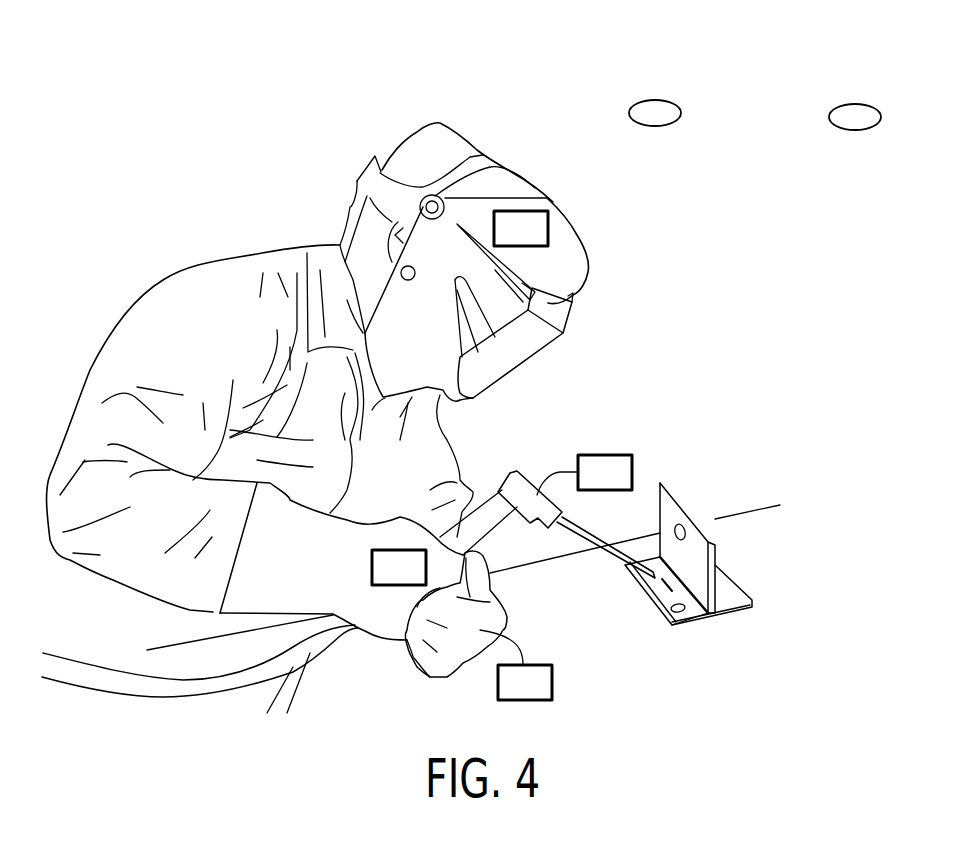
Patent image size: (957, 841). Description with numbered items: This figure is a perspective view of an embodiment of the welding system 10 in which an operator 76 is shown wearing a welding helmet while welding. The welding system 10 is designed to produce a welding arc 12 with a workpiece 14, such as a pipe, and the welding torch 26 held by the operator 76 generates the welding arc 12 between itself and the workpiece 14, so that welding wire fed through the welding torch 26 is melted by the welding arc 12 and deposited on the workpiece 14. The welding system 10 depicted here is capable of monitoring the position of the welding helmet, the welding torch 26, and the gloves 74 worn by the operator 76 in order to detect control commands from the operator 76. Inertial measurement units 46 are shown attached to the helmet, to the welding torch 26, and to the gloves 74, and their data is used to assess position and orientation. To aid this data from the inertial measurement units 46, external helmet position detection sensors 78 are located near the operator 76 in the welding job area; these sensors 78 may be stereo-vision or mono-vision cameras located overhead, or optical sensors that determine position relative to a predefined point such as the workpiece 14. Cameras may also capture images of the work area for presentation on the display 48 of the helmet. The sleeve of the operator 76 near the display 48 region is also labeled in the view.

The welding system 10 is at (192, 94).
The welding arc 12 is at (665, 585).
The workpiece 14 is at (735, 595).
The welding torch 26 is at (510, 480).
The inertial measurement unit 46 is at (550, 236).
The display 48 is at (525, 365).
The gloves 74 is at (387, 643).
The operator 76 is at (162, 278).
The external helmet position detection sensors 78 is at (834, 106).